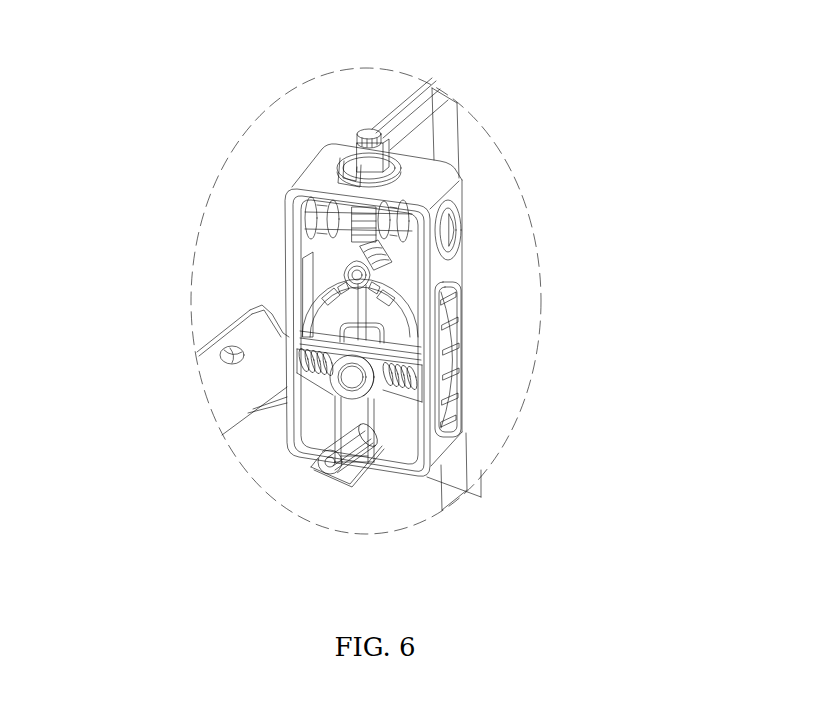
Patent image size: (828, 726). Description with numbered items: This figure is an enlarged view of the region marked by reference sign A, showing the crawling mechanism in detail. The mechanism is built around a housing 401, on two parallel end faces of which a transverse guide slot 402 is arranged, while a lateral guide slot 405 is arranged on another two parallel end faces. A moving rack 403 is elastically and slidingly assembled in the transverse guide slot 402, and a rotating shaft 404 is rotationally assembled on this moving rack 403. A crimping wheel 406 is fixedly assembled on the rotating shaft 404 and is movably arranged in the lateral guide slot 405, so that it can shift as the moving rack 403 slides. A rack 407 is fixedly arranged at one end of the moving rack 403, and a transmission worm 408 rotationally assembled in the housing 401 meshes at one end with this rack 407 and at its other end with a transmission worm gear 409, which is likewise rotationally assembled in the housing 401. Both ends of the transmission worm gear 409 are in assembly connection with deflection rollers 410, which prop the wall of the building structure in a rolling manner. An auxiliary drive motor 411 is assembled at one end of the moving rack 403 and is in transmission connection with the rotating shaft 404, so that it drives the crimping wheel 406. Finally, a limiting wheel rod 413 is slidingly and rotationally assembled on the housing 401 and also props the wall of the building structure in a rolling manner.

The reference sign A is at (258, 122).
The housing 401 is at (286, 237).
The transverse guide slot 402 is at (297, 374).
The moving rack 403 is at (337, 411).
The rotating shaft 404 is at (350, 388).
The lateral guide slot 405 is at (305, 287).
The crimping wheel 406 is at (453, 352).
The rack 407 is at (363, 308).
The transmission worm 408 is at (377, 265).
The transmission worm gear 409 is at (363, 220).
The deflection rollers 410 is at (305, 197).
The auxiliary drive motor 411 is at (320, 455).
The limiting wheel rod 413 is at (407, 113).